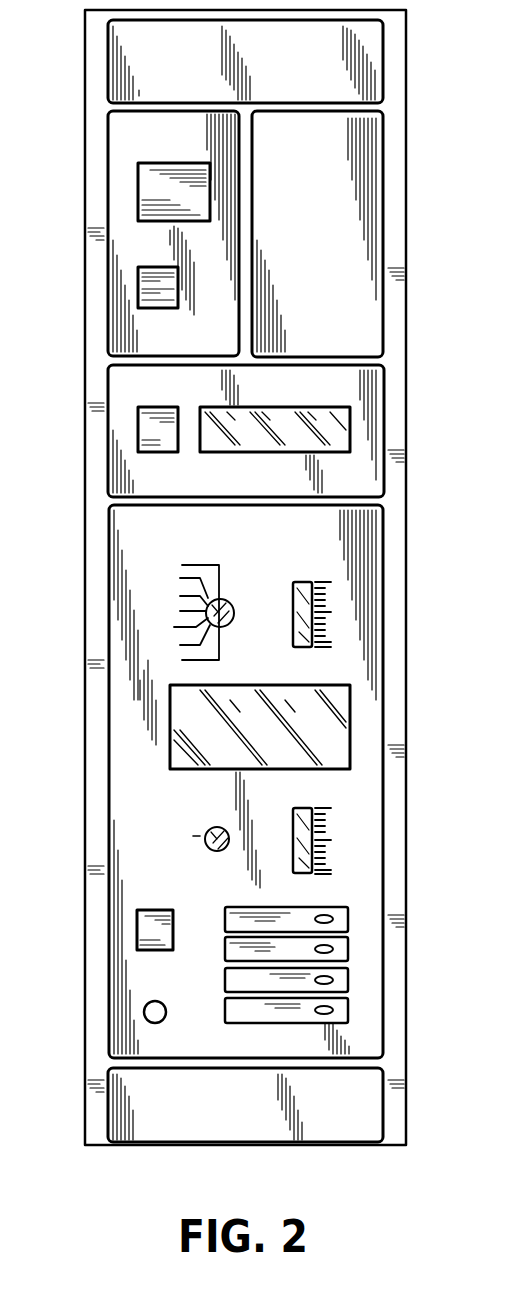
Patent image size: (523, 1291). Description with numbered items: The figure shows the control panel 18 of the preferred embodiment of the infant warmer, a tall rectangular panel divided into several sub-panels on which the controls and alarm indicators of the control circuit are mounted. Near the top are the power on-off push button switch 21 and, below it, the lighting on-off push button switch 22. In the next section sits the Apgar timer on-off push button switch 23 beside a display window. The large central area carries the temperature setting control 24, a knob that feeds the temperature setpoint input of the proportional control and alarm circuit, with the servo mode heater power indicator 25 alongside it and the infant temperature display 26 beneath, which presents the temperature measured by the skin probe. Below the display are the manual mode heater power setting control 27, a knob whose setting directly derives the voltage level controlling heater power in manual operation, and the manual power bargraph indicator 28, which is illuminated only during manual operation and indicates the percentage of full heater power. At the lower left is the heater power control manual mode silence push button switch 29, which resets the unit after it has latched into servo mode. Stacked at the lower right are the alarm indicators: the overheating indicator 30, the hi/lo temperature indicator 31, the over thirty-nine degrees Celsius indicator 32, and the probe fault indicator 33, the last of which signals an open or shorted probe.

The control panel 18 is at (412, 167).
The power on-off push button switch 21 is at (140, 202).
The lighting on-off push button switch 22 is at (140, 284).
The Apgar timer on-off push button switch 23 is at (157, 432).
The temperature setting control 24 is at (232, 602).
The servo mode heater power indicator 25 is at (300, 648).
The infant temperature display 26 is at (172, 714).
The manual mode heater power setting control 27 is at (207, 850).
The manual power bargraph indicator 28 is at (300, 808).
The heater power control manual mode silence push button switch 29 is at (138, 931).
The overheating indicator 30 is at (348, 918).
The hi/lo temperature indicator 31 is at (348, 952).
The over 39° C. indicator 32 is at (348, 985).
The probe fault indicator 33 is at (348, 1018).